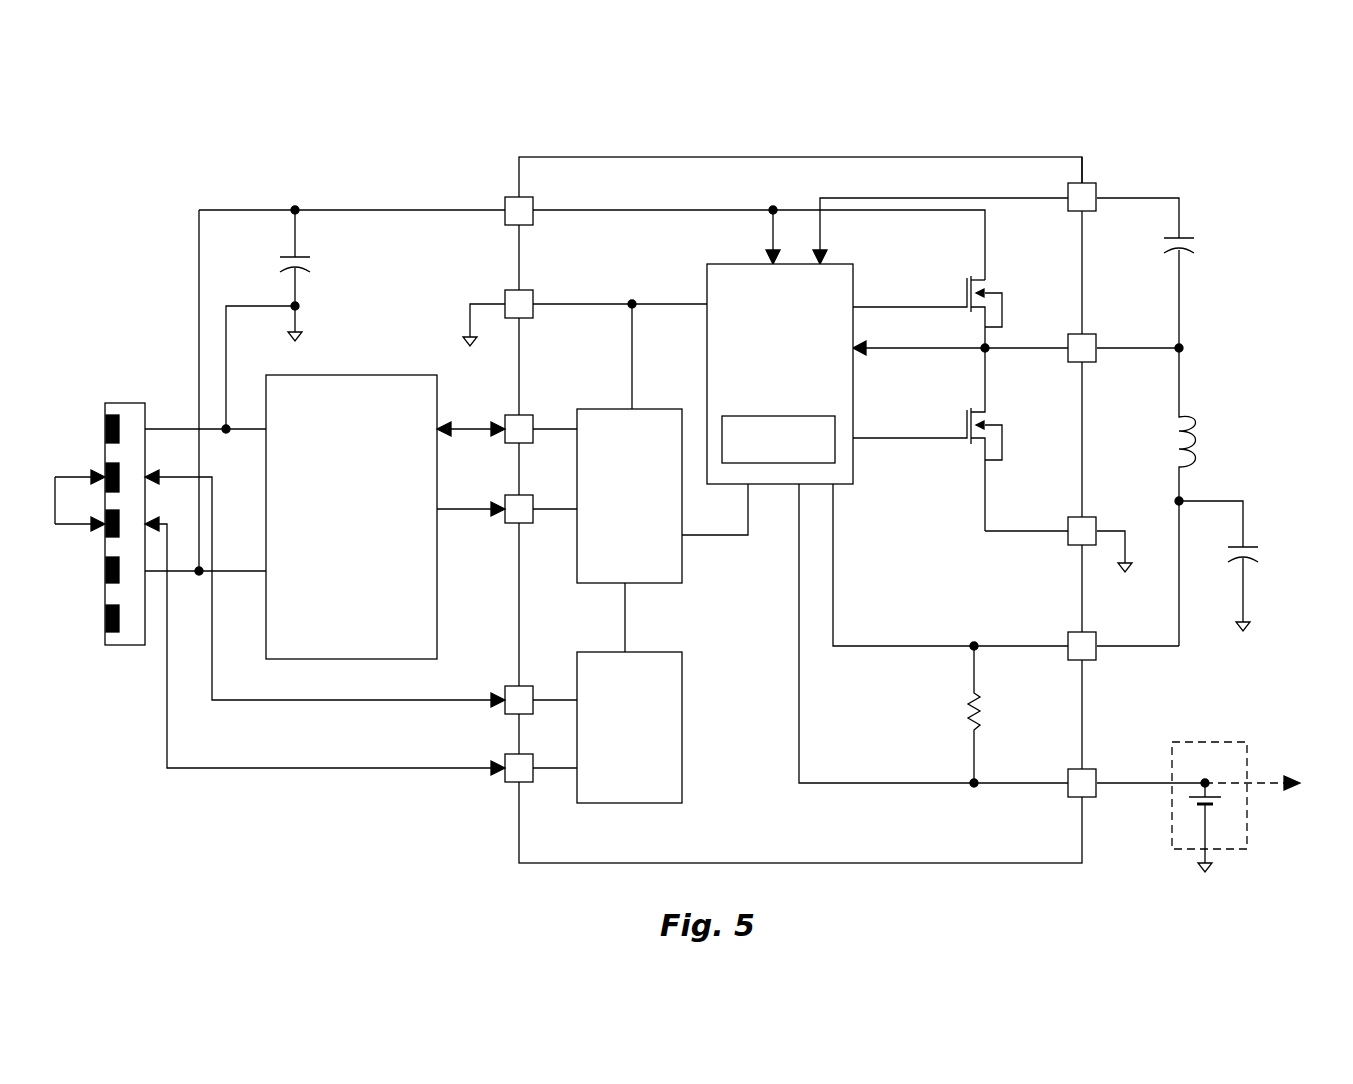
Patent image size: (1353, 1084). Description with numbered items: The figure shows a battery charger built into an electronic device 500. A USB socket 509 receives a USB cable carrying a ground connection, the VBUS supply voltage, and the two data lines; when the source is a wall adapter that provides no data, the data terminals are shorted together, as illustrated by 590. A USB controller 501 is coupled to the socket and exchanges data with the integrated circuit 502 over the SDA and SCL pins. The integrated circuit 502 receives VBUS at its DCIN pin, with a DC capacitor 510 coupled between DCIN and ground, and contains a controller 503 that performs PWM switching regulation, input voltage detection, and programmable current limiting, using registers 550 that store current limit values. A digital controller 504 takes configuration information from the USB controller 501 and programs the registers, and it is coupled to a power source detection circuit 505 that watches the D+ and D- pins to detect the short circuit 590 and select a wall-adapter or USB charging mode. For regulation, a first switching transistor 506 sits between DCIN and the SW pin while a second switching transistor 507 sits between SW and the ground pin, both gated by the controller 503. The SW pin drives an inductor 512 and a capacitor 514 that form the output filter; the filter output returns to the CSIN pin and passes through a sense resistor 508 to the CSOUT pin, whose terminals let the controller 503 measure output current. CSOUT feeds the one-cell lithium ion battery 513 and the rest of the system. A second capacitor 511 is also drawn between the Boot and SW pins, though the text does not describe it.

The electronic device 500 is at (237, 128).
The USB controller 501 is at (325, 575).
The integrated circuit 502 is at (800, 157).
The controller 503 is at (856, 270).
The digital controller 504 is at (629, 496).
The power source detection circuit 505 is at (629, 727).
The first switching transistor 506 is at (927, 312).
The second switching transistor 507 is at (927, 439).
The resistor 508 is at (996, 714).
The USB socket 509 is at (120, 403).
The DC capacitor 510 is at (315, 273).
The bootstrap capacitor C2 511 is at (1167, 273).
The inductor 512 is at (1210, 497).
The battery 513 is at (1175, 852).
The capacitor 514 is at (1239, 566).
The registers 550 is at (855, 413).
The short circuit between D+ and D- terminals 590 is at (70, 477).